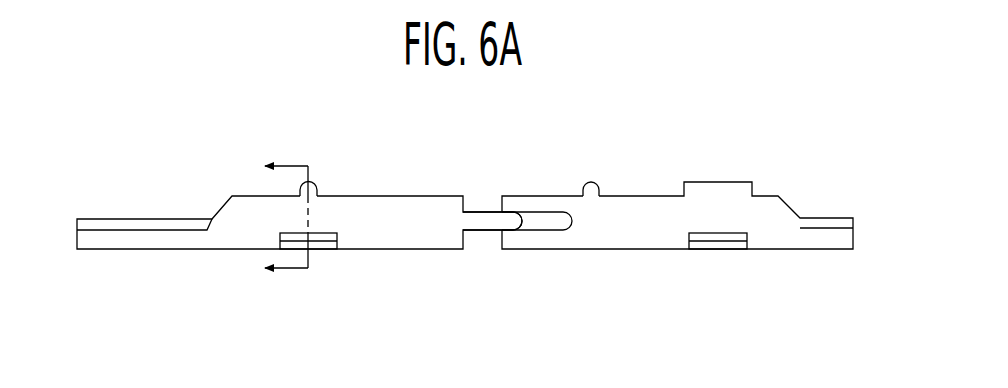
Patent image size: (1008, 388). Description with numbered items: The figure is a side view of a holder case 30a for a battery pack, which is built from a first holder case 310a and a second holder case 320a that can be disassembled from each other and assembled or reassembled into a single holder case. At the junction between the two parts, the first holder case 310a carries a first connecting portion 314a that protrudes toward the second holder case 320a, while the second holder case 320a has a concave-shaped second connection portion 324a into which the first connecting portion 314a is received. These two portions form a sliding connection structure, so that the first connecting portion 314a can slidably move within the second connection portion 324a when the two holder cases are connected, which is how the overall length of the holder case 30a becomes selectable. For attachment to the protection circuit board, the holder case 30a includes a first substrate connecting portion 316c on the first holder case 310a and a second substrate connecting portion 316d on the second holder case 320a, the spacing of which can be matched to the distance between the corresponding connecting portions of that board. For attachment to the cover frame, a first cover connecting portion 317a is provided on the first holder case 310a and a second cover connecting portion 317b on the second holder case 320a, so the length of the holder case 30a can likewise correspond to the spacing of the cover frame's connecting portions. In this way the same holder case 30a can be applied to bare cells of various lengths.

The holder case 30a is at (665, 107).
The first holder case 310a is at (387, 195).
The first substrate connecting portion 316c is at (317, 186).
The first connecting portion 314a is at (478, 221).
The first cover connecting portion 317a is at (323, 250).
The second holder case 320a is at (760, 226).
The second substrate connecting portion 316d is at (593, 186).
The second connection portion 324a is at (563, 233).
The second cover connecting portion 317b is at (717, 249).